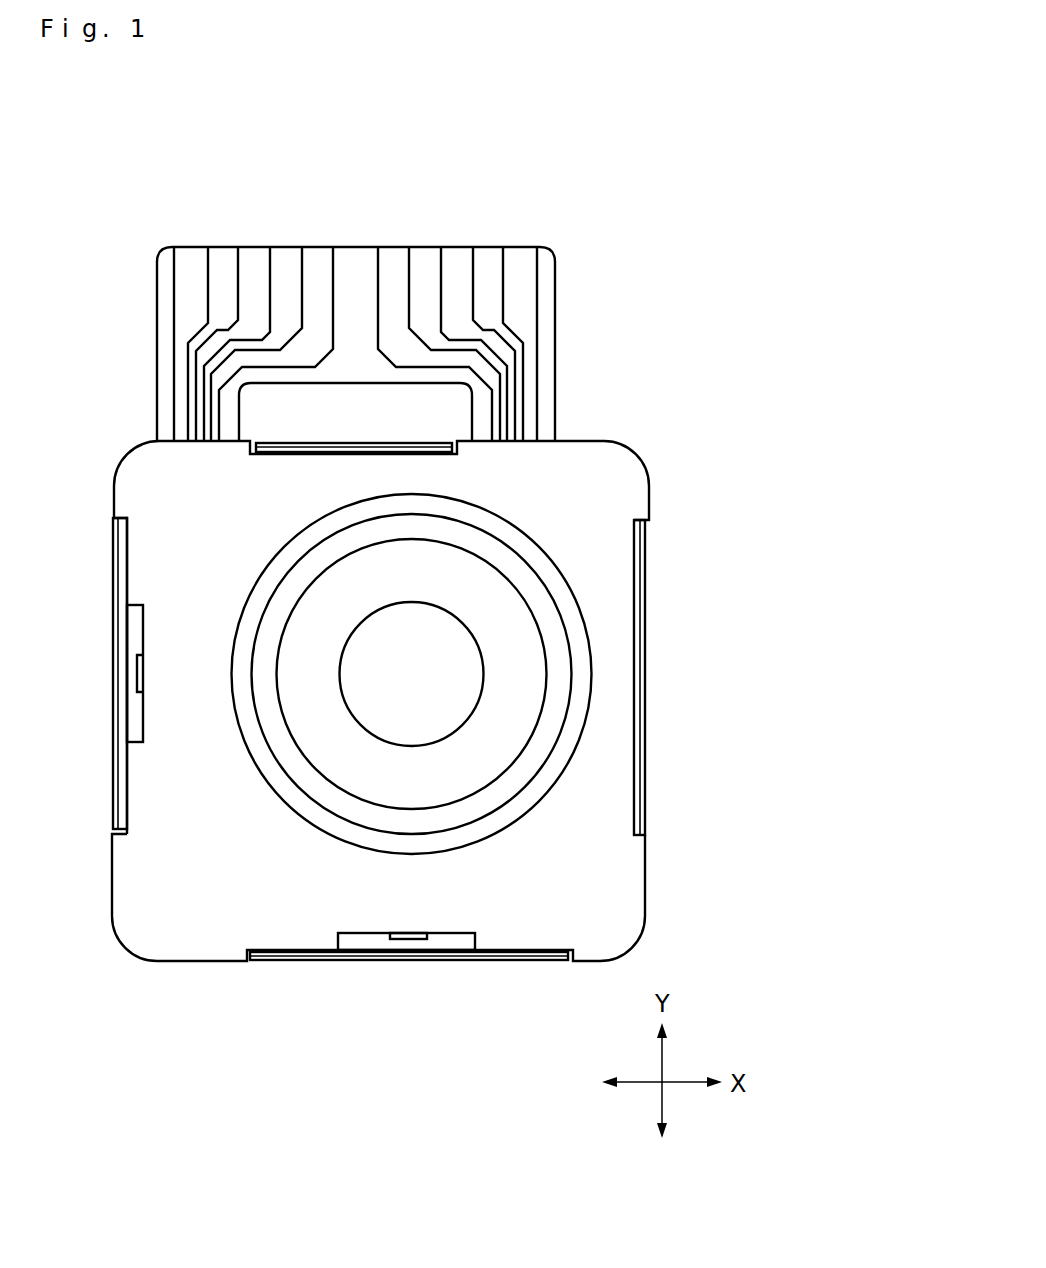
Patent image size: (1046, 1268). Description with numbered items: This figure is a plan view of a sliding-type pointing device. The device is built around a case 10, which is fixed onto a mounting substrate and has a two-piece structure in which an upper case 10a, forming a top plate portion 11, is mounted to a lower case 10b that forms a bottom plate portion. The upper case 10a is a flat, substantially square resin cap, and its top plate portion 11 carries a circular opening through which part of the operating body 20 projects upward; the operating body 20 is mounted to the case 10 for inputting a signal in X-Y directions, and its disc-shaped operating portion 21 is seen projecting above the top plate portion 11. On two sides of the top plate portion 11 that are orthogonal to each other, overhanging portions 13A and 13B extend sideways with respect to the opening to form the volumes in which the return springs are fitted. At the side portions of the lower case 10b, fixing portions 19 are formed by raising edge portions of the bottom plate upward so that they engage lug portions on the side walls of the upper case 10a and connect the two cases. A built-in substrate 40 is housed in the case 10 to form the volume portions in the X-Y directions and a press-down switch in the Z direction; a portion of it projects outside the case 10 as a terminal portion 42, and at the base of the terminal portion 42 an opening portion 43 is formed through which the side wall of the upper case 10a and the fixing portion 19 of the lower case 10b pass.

The case 10 is at (465, 701).
The upper case 10a is at (647, 852).
The lower case 10b is at (647, 804).
The top plate portion 11 is at (465, 733).
The overhanging portion 13A is at (132, 798).
The overhanging portion 13B is at (293, 937).
The fixing portion 19 is at (346, 443).
The operating body 20 is at (576, 580).
The operating portion 21 is at (565, 684).
The built-in substrate 40 is at (556, 381).
The terminal portion 42 is at (553, 312).
The opening portion 43 is at (270, 416).